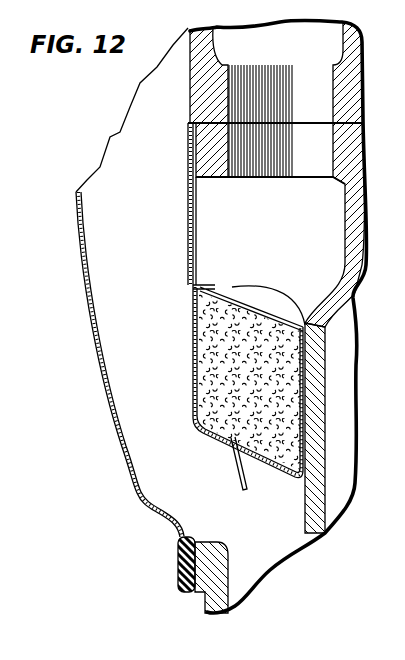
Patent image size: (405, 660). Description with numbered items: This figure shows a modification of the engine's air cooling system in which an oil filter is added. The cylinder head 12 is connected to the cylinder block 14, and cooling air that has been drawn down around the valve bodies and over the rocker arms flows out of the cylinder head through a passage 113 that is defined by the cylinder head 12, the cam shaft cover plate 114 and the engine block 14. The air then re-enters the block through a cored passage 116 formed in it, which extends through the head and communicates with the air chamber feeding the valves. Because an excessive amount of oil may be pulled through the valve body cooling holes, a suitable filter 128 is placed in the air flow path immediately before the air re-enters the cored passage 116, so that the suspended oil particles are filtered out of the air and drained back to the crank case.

The cylinder head 12 is at (352, 67).
The cylinder block 14 is at (348, 160).
The passage 116 is at (305, 88).
The passage 113 is at (107, 248).
The cam shaft cover plate 114 is at (86, 295).
The filter 128 is at (215, 353).